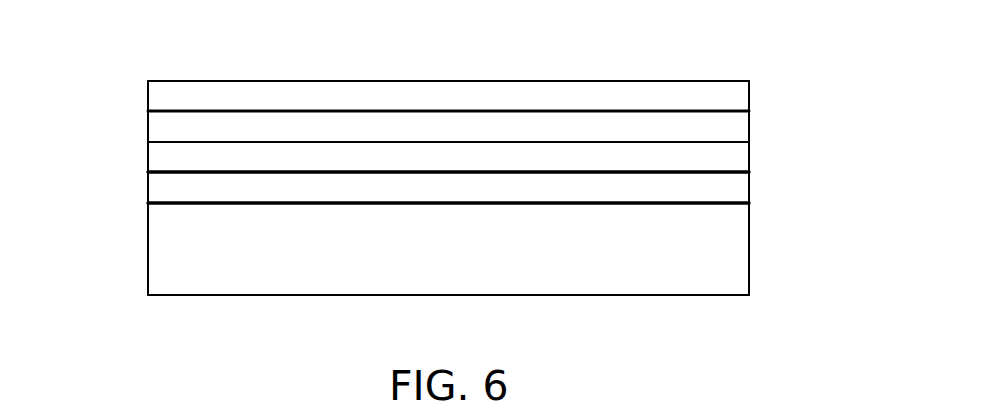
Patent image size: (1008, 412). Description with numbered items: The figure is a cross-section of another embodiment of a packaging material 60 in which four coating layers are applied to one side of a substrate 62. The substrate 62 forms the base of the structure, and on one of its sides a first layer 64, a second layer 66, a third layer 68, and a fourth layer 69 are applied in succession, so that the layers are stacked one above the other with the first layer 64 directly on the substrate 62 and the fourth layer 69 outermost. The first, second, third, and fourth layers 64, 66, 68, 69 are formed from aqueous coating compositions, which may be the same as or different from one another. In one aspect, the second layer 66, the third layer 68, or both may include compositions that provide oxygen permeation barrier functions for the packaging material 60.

The packaging material 60 is at (776, 247).
The substrate 62 is at (147, 270).
The first layer 64 is at (147, 183).
The second layer 66 is at (147, 155).
The third layer 68 is at (147, 127).
The fourth layer 69 is at (147, 92).